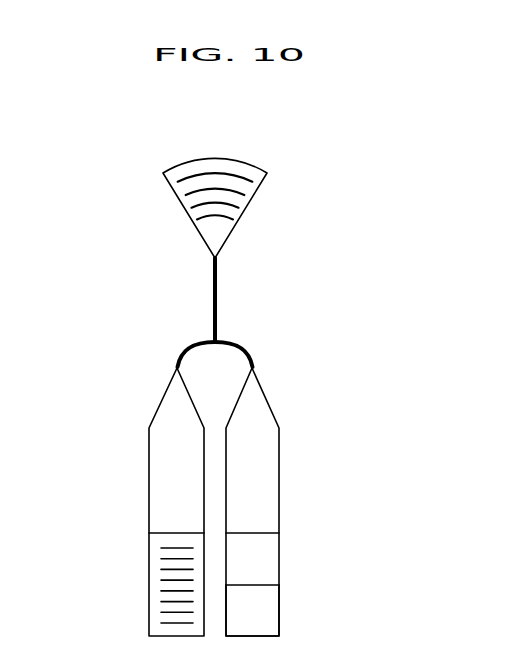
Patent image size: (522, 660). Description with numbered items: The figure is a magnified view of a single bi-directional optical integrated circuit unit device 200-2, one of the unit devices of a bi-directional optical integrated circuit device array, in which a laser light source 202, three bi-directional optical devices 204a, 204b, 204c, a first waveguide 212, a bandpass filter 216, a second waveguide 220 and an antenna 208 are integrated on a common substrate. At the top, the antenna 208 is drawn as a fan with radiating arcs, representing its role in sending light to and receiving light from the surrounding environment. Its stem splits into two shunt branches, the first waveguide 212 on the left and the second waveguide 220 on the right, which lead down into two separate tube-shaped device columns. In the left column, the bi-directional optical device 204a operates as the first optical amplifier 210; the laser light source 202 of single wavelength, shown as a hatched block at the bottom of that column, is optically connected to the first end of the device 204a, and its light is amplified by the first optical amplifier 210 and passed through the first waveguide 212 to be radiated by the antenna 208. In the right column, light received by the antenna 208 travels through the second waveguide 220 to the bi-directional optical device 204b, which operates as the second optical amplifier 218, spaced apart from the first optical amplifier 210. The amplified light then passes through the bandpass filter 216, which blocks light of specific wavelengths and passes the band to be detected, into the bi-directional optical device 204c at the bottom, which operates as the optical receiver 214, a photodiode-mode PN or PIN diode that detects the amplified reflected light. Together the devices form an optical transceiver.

The bi-directional optical integrated circuit unit device 200-2 is at (345, 182).
The antenna 208 is at (190, 203).
The first waveguide 212 is at (182, 348).
The second waveguide 220 is at (245, 348).
The first optical amplifier 210 is at (157, 488).
The bi-directional optical device 204a is at (132, 502).
The laser light source 202 is at (157, 584).
The second optical amplifier 218 is at (271, 488).
The bi-directional optical device 204b is at (315, 502).
The bandpass filter 216 is at (271, 558).
The optical receiver 214 is at (271, 612).
The bi-directional optical device 204c is at (314, 610).